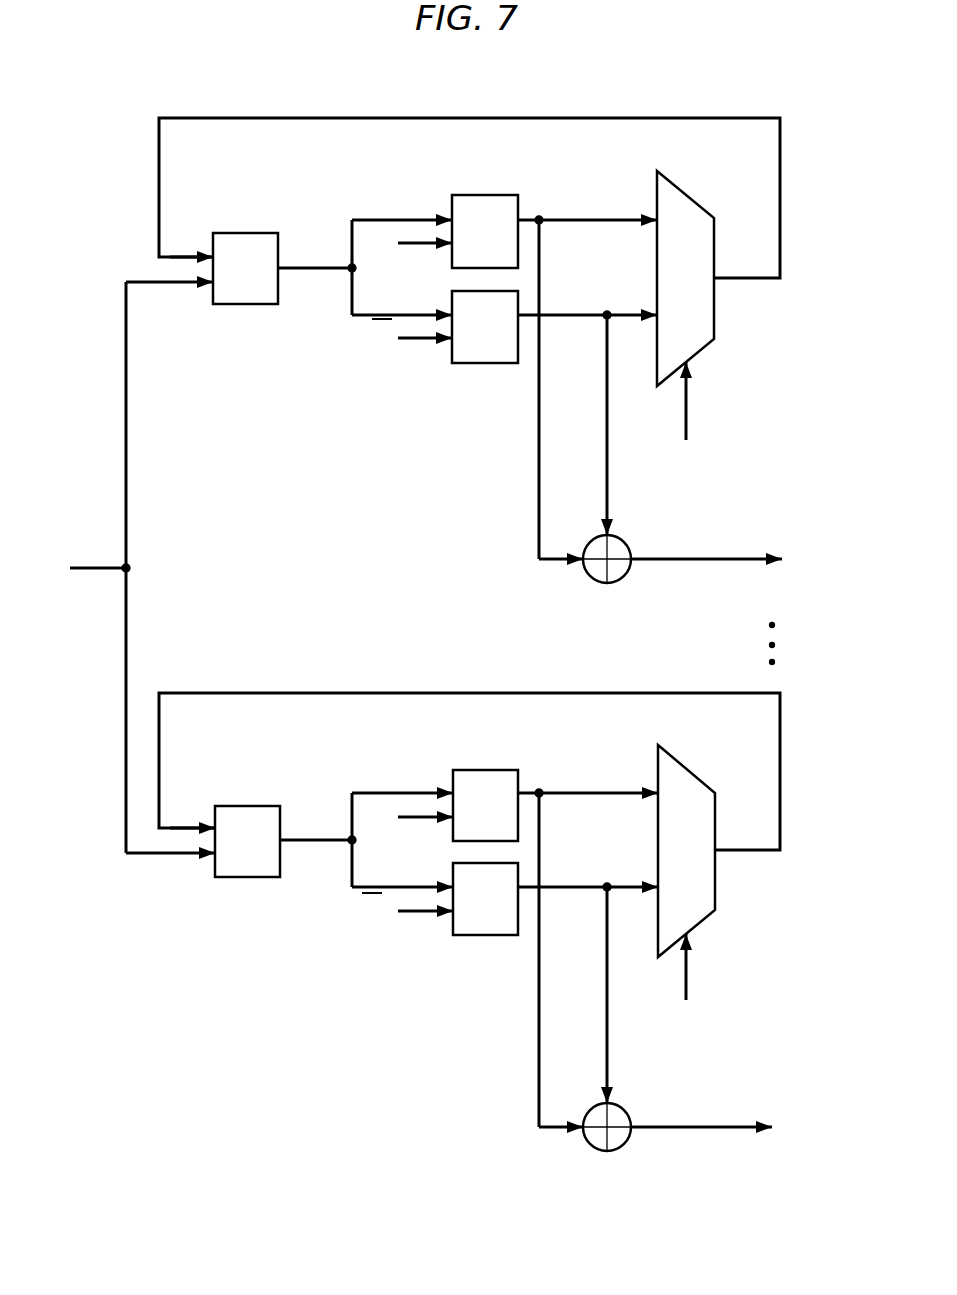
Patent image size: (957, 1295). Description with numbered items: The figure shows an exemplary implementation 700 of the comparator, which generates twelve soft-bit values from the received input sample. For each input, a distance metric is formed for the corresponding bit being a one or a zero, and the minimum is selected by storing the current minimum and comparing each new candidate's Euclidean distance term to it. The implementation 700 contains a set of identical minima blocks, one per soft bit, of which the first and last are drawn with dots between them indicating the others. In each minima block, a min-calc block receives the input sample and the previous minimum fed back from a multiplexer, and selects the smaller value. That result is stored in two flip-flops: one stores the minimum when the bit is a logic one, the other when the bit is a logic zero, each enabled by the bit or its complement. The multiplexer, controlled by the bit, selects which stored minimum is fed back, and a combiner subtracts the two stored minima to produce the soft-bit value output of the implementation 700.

The comparator implementation 700 is at (758, 90).